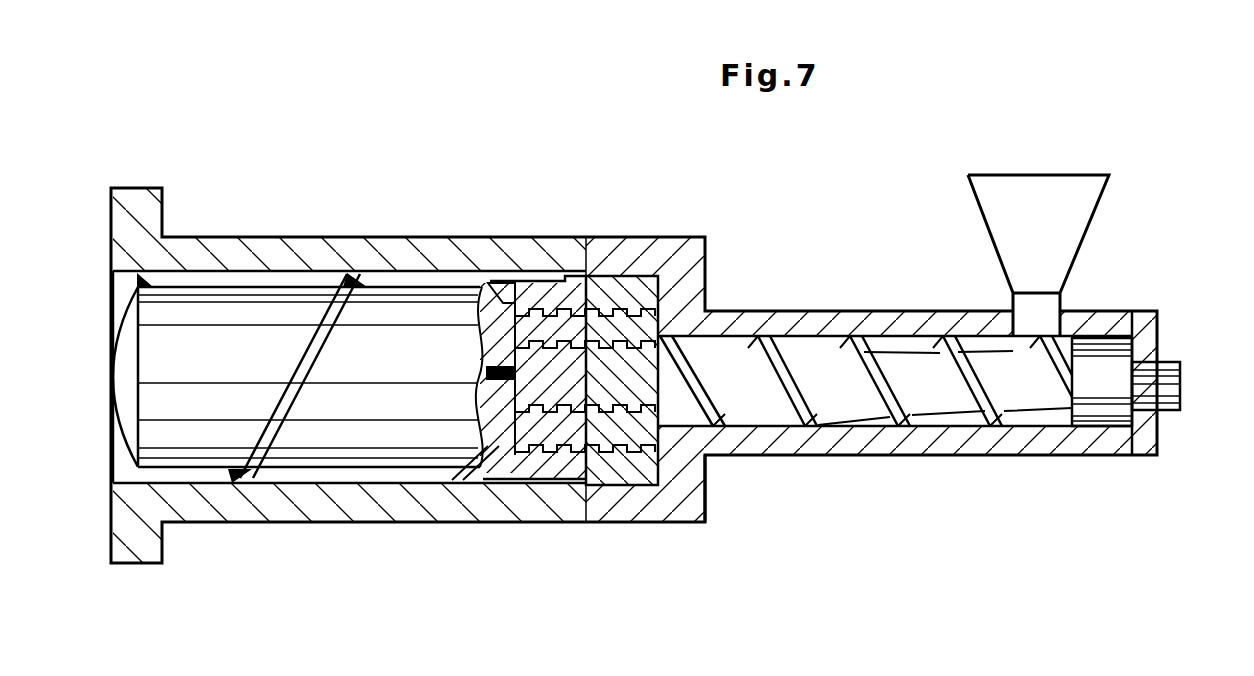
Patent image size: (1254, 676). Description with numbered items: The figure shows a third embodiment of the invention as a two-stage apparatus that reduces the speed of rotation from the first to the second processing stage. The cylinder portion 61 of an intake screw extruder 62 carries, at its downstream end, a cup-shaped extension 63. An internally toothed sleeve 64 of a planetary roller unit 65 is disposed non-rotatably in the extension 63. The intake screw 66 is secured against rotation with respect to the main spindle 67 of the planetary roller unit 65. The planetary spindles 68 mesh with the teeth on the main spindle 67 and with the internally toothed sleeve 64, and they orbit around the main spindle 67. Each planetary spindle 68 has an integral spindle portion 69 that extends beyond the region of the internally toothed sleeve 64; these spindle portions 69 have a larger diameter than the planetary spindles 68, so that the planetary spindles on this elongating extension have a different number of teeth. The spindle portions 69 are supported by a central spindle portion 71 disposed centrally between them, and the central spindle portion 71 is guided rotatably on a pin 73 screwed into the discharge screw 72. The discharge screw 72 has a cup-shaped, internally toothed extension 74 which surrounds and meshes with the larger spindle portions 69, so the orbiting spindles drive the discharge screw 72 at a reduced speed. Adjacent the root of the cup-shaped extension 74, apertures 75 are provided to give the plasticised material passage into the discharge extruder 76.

The cylinder portion 61 is at (939, 447).
The intake screw extruder 62 is at (865, 258).
The cup-shaped extension 63 is at (645, 262).
The internally toothed sleeve 64 is at (608, 482).
The planetary roller unit 65 is at (595, 203).
The intake screw 66 is at (828, 428).
The main spindle 67 is at (706, 458).
The planetary spindles 68 is at (640, 457).
The spindle portion 69 is at (555, 445).
The central spindle portion 71 is at (510, 405).
The discharge screw 72 is at (326, 470).
The pin 73 is at (483, 372).
The cup-shaped, internally toothed extension 74 is at (530, 292).
The apertures 75 is at (485, 480).
The discharge extruder 76 is at (306, 192).